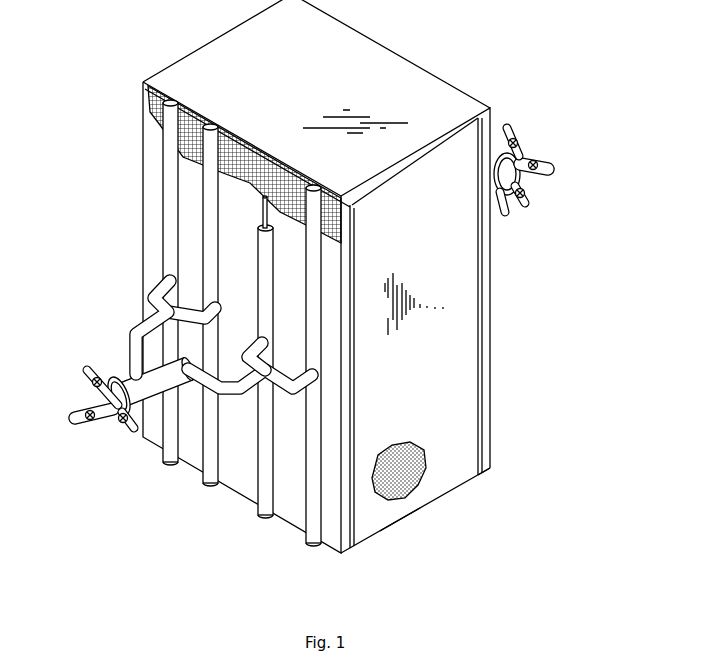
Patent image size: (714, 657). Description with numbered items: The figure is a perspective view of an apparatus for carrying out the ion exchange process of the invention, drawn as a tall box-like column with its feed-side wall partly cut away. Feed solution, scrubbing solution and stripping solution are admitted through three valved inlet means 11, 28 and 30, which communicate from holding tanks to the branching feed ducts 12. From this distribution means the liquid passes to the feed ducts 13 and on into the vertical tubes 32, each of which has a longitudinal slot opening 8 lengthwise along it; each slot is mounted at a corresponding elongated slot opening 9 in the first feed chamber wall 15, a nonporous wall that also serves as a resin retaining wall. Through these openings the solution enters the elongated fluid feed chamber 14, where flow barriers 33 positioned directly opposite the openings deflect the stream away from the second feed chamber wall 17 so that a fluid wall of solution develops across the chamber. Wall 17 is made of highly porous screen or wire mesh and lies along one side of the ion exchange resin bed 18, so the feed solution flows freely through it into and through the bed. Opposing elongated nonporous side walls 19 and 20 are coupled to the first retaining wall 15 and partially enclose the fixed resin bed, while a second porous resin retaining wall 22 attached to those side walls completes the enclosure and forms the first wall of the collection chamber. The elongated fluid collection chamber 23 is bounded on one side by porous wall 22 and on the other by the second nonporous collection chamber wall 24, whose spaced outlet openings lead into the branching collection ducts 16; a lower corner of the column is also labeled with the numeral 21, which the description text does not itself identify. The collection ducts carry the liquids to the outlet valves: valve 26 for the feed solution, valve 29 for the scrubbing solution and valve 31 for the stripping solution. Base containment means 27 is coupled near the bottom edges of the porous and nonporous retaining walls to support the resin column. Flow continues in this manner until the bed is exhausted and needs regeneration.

The longitudinal slot opening 8 is at (273, 232).
The elongated slot opening 9 is at (263, 215).
The feed solution valved inlet means 11 is at (73, 411).
The branching feed duct 12 is at (138, 373).
The feed duct 13 is at (203, 312).
The fluid feed chamber 14 is at (364, 210).
The first feed chamber wall 15 is at (147, 133).
The branching collection duct 16 is at (502, 203).
The second feed chamber wall 17 is at (357, 205).
The ion exchange resin bed 18 is at (405, 444).
The nonporous side wall 19 is at (205, 49).
The nonporous side wall 20 is at (398, 513).
The corner 21 is at (489, 470).
The second porous resin retaining wall 22 is at (478, 395).
The fluid collection chamber 23 is at (488, 447).
The second nonporous collection chamber wall 24 is at (492, 410).
The feed solution outlet valve 26 is at (536, 160).
The base containment means 27 is at (468, 473).
The scrubbing solution valved inlet means 28 is at (88, 378).
The scrubbing solution outlet valve 29 is at (515, 142).
The stripping solution valved inlet means 30 is at (108, 425).
The stripping solution outlet valve 31 is at (525, 195).
The tube 32 is at (219, 213).
The flow barrier 33 is at (224, 116).